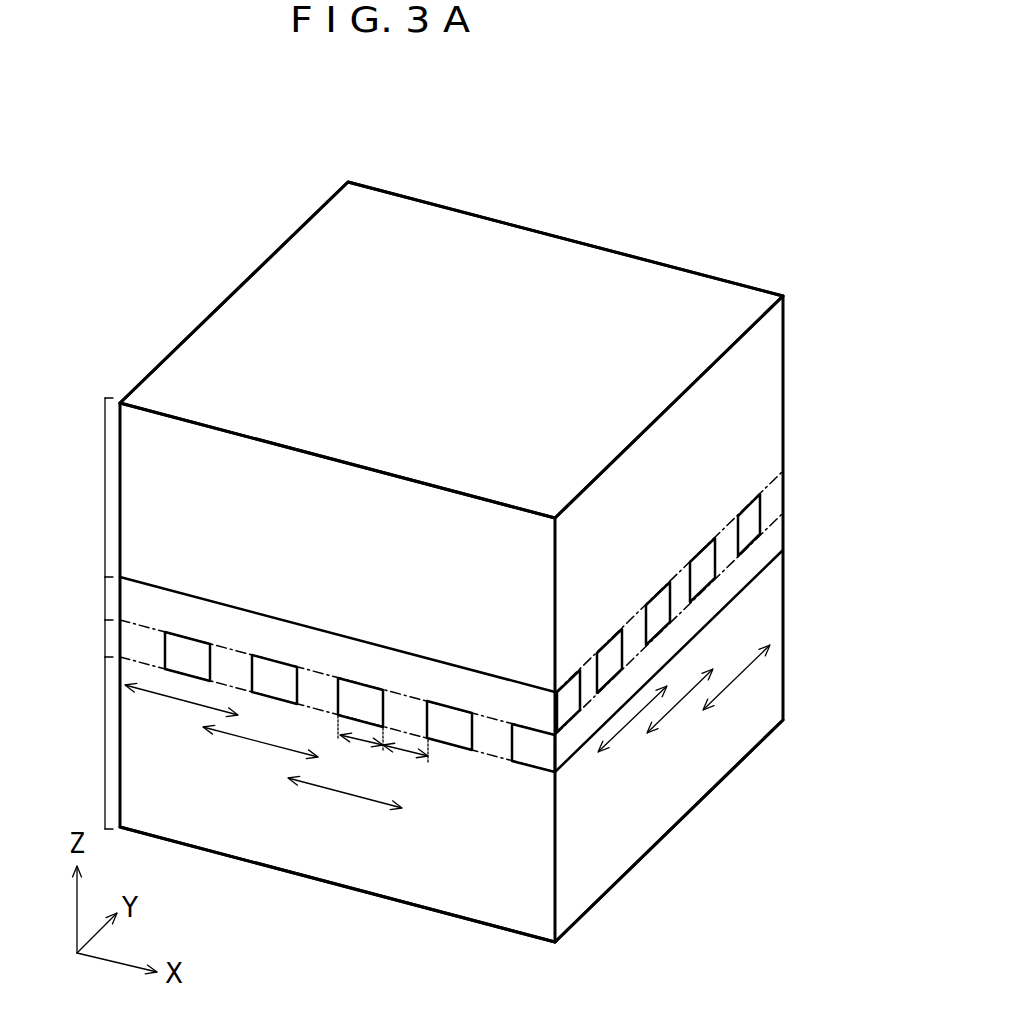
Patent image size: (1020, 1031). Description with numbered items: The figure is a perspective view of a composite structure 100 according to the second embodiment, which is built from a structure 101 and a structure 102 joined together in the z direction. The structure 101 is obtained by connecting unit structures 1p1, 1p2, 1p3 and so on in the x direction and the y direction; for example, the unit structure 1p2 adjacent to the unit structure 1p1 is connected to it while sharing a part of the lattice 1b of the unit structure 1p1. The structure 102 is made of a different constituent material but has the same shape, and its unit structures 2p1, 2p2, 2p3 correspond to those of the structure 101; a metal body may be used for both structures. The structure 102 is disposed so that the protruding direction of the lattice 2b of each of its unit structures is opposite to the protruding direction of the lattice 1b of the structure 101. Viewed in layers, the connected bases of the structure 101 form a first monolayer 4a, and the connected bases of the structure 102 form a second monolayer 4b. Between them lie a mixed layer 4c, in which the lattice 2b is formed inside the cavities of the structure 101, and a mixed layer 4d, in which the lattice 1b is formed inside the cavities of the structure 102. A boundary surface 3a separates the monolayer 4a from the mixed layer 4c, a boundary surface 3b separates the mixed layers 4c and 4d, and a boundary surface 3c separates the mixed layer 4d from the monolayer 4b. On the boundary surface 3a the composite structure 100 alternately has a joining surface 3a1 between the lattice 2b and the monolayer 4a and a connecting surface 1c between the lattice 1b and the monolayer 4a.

The composite structure 100 is at (650, 157).
The structure 101 is at (335, 895).
The structure 102 is at (465, 177).
The lattice 1b is at (192, 615).
The lattice 2b is at (275, 672).
The boundary surface 3b is at (637, 657).
The boundary surface 3c is at (725, 523).
The boundary surface 3a is at (488, 753).
The joining surface 3a1 is at (360, 747).
The connecting surface 1c is at (405, 765).
The unit structure 1p1 is at (181, 707).
The unit structure 1p2 is at (260, 752).
The unit structure 1p3 is at (345, 803).
The unit structure 2p1 is at (632, 730).
The unit structure 2p2 is at (680, 708).
The unit structure 2p3 is at (737, 682).
The first monolayer 4a is at (105, 745).
The second monolayer 4b is at (105, 490).
The mixed layer 4c is at (105, 636).
The mixed layer 4d is at (105, 600).